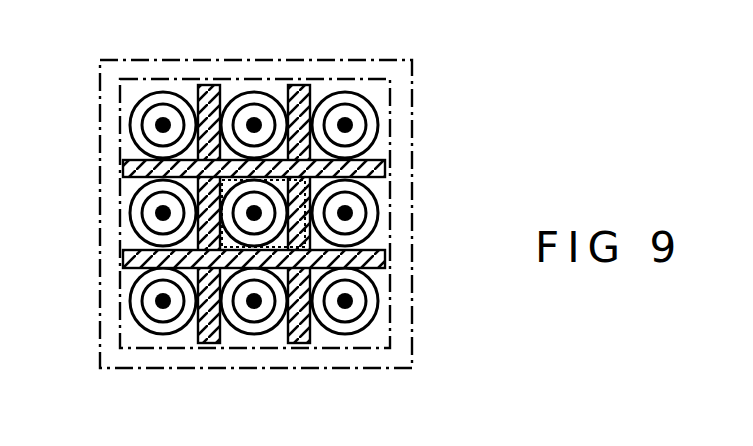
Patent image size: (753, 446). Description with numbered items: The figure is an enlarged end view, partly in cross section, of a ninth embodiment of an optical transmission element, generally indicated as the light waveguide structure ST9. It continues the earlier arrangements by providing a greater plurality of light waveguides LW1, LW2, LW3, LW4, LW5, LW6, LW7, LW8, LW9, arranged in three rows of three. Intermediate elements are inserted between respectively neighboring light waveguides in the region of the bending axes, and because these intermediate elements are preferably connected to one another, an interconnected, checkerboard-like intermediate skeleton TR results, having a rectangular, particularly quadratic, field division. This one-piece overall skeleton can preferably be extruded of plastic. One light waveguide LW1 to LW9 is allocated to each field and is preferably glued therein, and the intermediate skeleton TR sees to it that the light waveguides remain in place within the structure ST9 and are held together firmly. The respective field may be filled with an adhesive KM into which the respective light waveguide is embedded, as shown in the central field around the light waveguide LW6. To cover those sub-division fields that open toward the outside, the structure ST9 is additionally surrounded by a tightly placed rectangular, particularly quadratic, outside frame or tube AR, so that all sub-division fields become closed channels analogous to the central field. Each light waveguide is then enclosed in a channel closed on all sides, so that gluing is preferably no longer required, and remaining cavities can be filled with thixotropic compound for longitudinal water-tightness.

The light waveguide LW1 is at (163, 102).
The light waveguide LW2 is at (253, 102).
The light waveguide LW3 is at (344, 102).
The light waveguide LW4 is at (140, 194).
The light waveguide LW5 is at (366, 190).
The light waveguide LW6 is at (364, 229).
The light waveguide LW7 is at (163, 328).
The light waveguide LW8 is at (253, 328).
The light waveguide LW9 is at (344, 328).
The adhesive KM is at (215, 240).
The outside frame or tube AR is at (398, 298).
The intermediate skeleton TR is at (416, 338).
The light waveguide structure ST9 is at (437, 375).